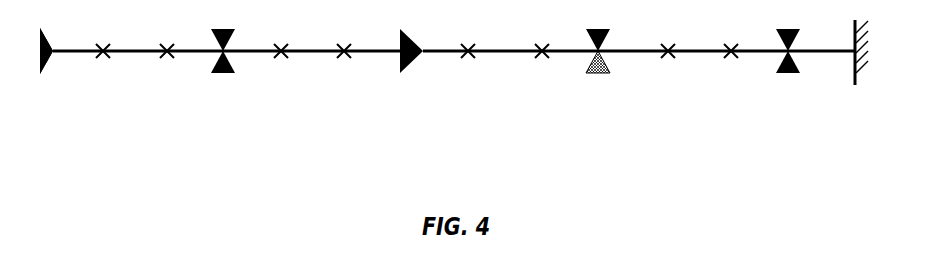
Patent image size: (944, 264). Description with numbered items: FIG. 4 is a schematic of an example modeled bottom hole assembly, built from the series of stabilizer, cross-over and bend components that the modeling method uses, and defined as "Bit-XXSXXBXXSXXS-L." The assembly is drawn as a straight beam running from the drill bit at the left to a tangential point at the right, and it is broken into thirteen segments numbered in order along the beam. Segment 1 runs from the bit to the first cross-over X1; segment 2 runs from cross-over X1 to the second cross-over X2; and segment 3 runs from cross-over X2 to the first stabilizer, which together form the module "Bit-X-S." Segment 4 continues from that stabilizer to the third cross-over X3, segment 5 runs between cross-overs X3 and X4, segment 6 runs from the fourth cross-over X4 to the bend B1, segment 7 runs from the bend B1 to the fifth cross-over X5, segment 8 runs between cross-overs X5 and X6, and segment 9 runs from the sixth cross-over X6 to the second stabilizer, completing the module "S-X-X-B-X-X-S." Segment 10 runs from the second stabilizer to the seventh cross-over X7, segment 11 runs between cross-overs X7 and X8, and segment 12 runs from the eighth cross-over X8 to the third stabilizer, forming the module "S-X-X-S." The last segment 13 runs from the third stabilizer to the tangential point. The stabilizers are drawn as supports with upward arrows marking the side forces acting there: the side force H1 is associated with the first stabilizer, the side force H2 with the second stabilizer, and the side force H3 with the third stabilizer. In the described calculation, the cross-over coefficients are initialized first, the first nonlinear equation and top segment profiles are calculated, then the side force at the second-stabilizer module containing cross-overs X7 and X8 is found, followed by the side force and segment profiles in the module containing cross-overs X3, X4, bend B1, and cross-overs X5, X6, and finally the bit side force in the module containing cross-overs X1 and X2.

The segment Bit-X 1 is at (78, 74).
The segment X-X 2 is at (135, 74).
The segment X-S 3 is at (195, 74).
The segment S-X 4 is at (252, 74).
The segment X-X 5 is at (312, 74).
The segment X-B 6 is at (372, 74).
The segment B-X 7 is at (445, 74).
The segment X-X 8 is at (505, 74).
The segment X-S 9 is at (570, 74).
The segment S-X 10 is at (633, 74).
The segment X-X 11 is at (699, 74).
The segment X-S 12 is at (759, 74).
The segment S-Tangential Point (L) 13 is at (821, 74).
The first cross-over X1 is at (107, 34).
The second cross-over X2 is at (171, 34).
The third cross-over X3 is at (285, 34).
The fourth cross-over X4 is at (348, 34).
The fifth cross-over X5 is at (472, 34).
The sixth cross-over X6 is at (546, 34).
The seventh cross-over X7 is at (672, 34).
The eighth cross-over X8 is at (735, 34).
The bend B1 is at (412, 37).
The side force H1 is at (41, 92).
The side force H2 is at (598, 92).
The side force H3 is at (788, 92).